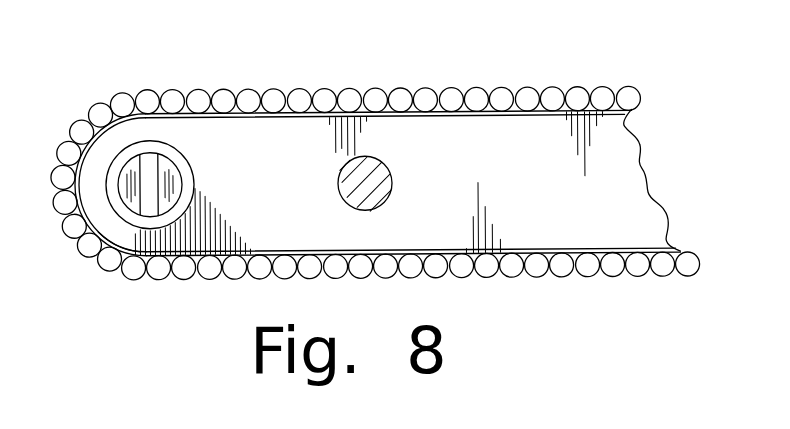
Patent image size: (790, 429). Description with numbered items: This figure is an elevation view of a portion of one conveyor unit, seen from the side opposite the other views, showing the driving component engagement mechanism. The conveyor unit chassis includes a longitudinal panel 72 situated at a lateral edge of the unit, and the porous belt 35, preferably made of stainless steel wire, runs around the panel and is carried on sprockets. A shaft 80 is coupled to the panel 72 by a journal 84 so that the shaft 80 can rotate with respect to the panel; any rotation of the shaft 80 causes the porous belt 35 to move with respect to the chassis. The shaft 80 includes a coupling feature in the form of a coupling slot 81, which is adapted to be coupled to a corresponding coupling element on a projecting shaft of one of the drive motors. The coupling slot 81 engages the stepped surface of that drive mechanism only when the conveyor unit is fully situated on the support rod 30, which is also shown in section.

The support rod 30 is at (387, 177).
The porous belt 35 is at (273, 100).
The longitudinal panel 72 is at (522, 128).
The shaft 80 is at (173, 173).
The coupling slot 81 is at (150, 162).
The journal 84 is at (95, 243).